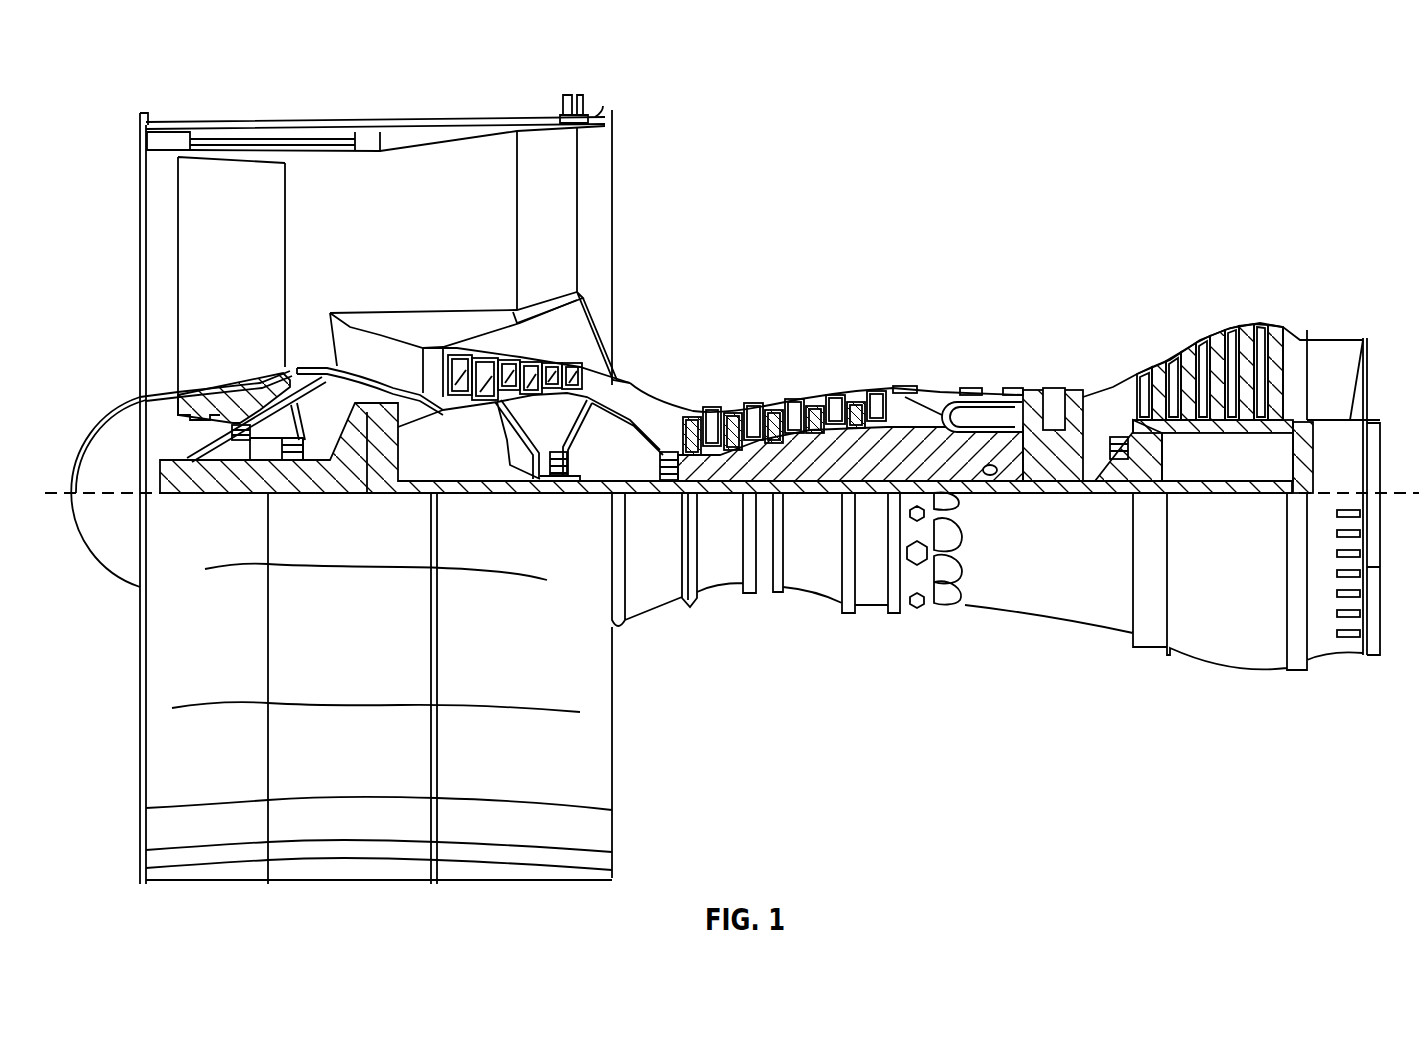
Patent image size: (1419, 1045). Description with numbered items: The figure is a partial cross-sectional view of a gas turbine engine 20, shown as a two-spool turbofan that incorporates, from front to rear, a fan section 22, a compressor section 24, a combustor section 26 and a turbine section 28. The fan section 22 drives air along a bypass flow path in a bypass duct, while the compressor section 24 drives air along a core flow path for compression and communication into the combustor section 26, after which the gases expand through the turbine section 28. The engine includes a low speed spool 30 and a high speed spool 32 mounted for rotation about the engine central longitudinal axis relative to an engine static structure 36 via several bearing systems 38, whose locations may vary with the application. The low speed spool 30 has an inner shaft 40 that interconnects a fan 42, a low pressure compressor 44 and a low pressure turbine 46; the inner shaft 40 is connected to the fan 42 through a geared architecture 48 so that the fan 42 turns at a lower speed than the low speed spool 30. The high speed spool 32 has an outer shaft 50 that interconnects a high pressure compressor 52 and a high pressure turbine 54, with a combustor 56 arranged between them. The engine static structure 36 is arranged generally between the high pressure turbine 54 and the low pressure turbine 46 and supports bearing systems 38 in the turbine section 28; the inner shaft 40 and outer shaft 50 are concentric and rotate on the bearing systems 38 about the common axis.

The gas turbine engine 20 is at (1188, 160).
The fan section 22 is at (247, 113).
The compressor section 24 is at (806, 346).
The combustor section 26 is at (1008, 408).
The turbine section 28 is at (1231, 375).
The low speed spool 30 is at (830, 505).
The high speed spool 32 is at (883, 447).
The engine static structure 36 is at (871, 610).
The bearing systems 38 is at (245, 457).
The inner shaft 40 is at (627, 498).
The fan 42 is at (227, 259).
The low pressure compressor 44 is at (530, 370).
The low pressure turbine 46 is at (1218, 352).
The geared architecture 48 is at (380, 462).
The outer shaft 50 is at (1000, 478).
The high pressure compressor 52 is at (795, 460).
The high pressure turbine 54 is at (1062, 397).
The combustor 56 is at (975, 412).